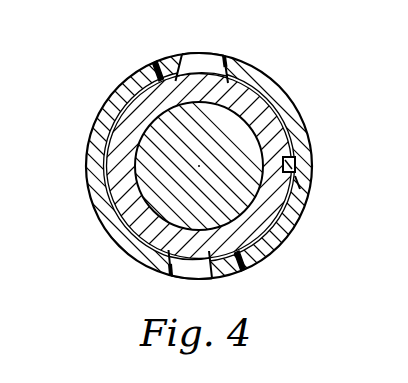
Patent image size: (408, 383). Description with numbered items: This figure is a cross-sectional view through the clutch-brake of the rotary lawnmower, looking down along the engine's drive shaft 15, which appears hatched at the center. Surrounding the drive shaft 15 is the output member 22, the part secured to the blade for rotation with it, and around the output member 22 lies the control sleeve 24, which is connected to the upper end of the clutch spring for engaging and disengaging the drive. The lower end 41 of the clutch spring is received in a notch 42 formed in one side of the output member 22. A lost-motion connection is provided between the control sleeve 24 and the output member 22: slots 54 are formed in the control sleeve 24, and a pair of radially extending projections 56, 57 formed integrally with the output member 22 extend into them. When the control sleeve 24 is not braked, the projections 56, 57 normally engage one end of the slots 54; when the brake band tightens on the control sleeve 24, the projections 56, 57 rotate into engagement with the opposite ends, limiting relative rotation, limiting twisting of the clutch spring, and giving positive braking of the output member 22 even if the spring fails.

The drive shaft 15 is at (153, 175).
The output member 22 is at (150, 230).
The control sleeve 24 is at (290, 233).
The lower end of the clutch spring 41 is at (296, 163).
The notch 42 is at (300, 183).
The slot 54 is at (224, 56).
The projection 56 is at (182, 53).
The projection 57 is at (243, 275).